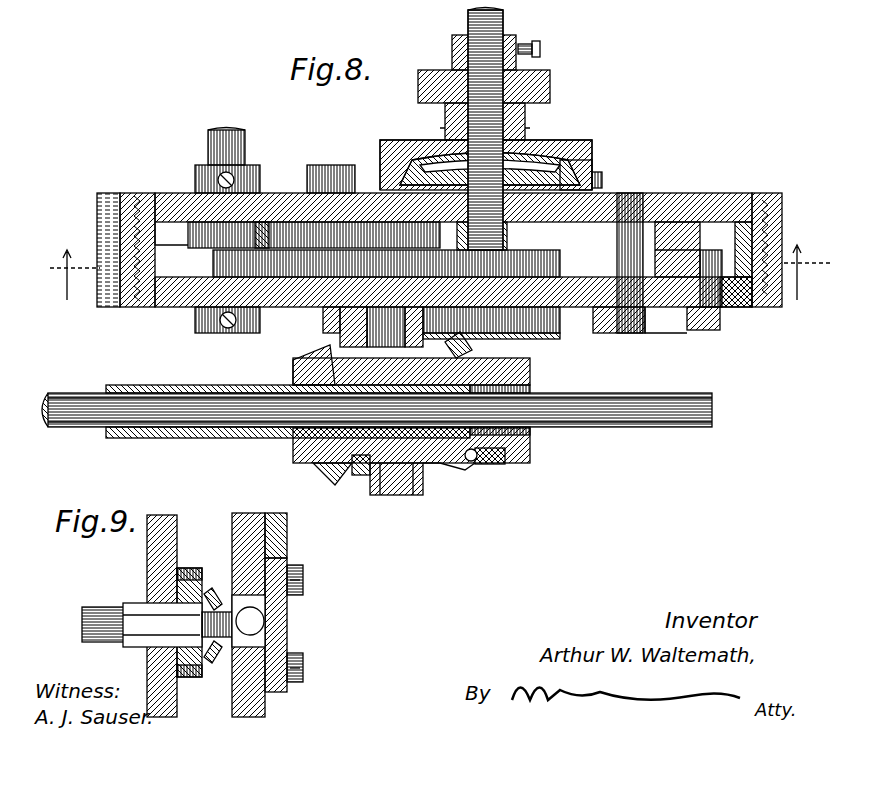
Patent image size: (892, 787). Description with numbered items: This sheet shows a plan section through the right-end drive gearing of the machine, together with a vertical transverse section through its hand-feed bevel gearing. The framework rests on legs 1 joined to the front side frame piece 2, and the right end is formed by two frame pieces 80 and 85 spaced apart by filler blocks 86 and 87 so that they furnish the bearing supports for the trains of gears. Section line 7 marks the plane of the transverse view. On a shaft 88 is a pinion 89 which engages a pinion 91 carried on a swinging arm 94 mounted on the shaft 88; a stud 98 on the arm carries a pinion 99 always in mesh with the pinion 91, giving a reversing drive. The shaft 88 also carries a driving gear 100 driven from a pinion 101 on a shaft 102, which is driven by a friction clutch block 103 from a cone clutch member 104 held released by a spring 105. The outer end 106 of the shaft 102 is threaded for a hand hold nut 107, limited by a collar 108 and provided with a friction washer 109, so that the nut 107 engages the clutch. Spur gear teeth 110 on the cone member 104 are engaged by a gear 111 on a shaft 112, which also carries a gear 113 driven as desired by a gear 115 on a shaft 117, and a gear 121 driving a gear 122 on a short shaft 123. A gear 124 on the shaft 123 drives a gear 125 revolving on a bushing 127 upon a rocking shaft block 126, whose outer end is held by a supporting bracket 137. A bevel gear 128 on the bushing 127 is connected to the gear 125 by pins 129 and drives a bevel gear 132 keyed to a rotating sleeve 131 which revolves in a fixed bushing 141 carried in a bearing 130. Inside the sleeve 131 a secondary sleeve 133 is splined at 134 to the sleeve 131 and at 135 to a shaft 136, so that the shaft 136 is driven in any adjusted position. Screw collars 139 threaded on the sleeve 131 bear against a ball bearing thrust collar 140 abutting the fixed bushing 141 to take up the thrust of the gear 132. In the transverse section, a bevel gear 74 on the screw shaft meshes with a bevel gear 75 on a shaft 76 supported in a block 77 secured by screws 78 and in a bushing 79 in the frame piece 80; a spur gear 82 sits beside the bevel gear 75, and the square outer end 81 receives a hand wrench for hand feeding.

In FIG. 8, the legs 1 is at (108, 221).
In FIG. 8, the side frame piece 2 is at (150, 193).
In FIG. 9, the side frame piece 2 is at (250, 513).
In FIG. 8, the section line 7 is at (440, 280).
In FIG. 9, the bevel gear 74 is at (225, 662).
In FIG. 9, the bevel gear 75 is at (215, 640).
In FIG. 9, the shaft 76 is at (185, 655).
In FIG. 9, the block 77 is at (288, 625).
In FIG. 9, the screws 78 is at (303, 575).
In FIG. 9, the bushing 79 is at (150, 647).
In FIG. 8, the frame piece 80 is at (762, 305).
In FIG. 9, the frame piece 80 is at (147, 552).
In FIG. 9, the outer end 81 is at (82, 630).
In FIG. 9, the spur gear 82 is at (202, 677).
In FIG. 8, the frame piece 85 is at (720, 200).
In FIG. 9, the frame piece 85 is at (265, 716).
In FIG. 8, the filler block 86 is at (778, 230).
In FIG. 8, the filler block 87 is at (128, 250).
In FIG. 8, the shaft 88 is at (640, 333).
In FIG. 8, the pinion 89 is at (697, 330).
In FIG. 8, the pinion 91 is at (705, 200).
In FIG. 8, the arm 94 is at (660, 333).
In FIG. 8, the stud 98 is at (722, 306).
In FIG. 8, the pinion 99 is at (768, 200).
In FIG. 8, the driving gear 100 is at (680, 222).
In FIG. 8, the pinion 101 is at (458, 222).
In FIG. 8, the shaft 102 is at (545, 160).
In FIG. 8, the friction clutch block 103 is at (582, 175).
In FIG. 8, the cone clutch member 104 is at (392, 140).
In FIG. 8, the spring 105 is at (520, 162).
In FIG. 8, the outer end 106 is at (503, 22).
In FIG. 8, the hand hold nut 107 is at (540, 75).
In FIG. 8, the collar 108 is at (452, 48).
In FIG. 8, the friction washer 109 is at (444, 132).
In FIG. 8, the spur gear teeth 110 is at (602, 178).
In FIG. 8, the gear 111 is at (318, 165).
In FIG. 8, the shaft 112 is at (290, 222).
In FIG. 8, the gear 113 is at (262, 222).
In FIG. 8, the gear 115 is at (186, 245).
In FIG. 8, the shaft 117 is at (222, 130).
In FIG. 8, the gear 121 is at (275, 280).
In FIG. 8, the gear 122 is at (556, 262).
In FIG. 8, the shaft 123 is at (540, 330).
In FIG. 8, the gear 124 is at (530, 339).
In FIG. 8, the gear 125 is at (330, 325).
In FIG. 8, the shaft 126 is at (389, 327).
In FIG. 8, the bushing 127 is at (422, 336).
In FIG. 8, the bevel gear 128 is at (472, 345).
In FIG. 8, the pins 129 is at (293, 362).
In FIG. 8, the bearing 130 is at (362, 475).
In FIG. 8, the rotating sleeve 131 is at (293, 450).
In FIG. 8, the bevel gear 132 is at (328, 478).
In FIG. 8, the secondary sleeve 133 is at (150, 438).
In FIG. 8, the spline 134 is at (147, 385).
In FIG. 8, the spline 135 is at (130, 412).
In FIG. 8, the shaft 136 is at (55, 427).
In FIG. 8, the supporting bracket 137 is at (423, 495).
In FIG. 8, the screw collars 139 is at (477, 460).
In FIG. 8, the ball bearing thrust collar 140 is at (485, 464).
In FIG. 8, the fixed bushing 141 is at (455, 470).